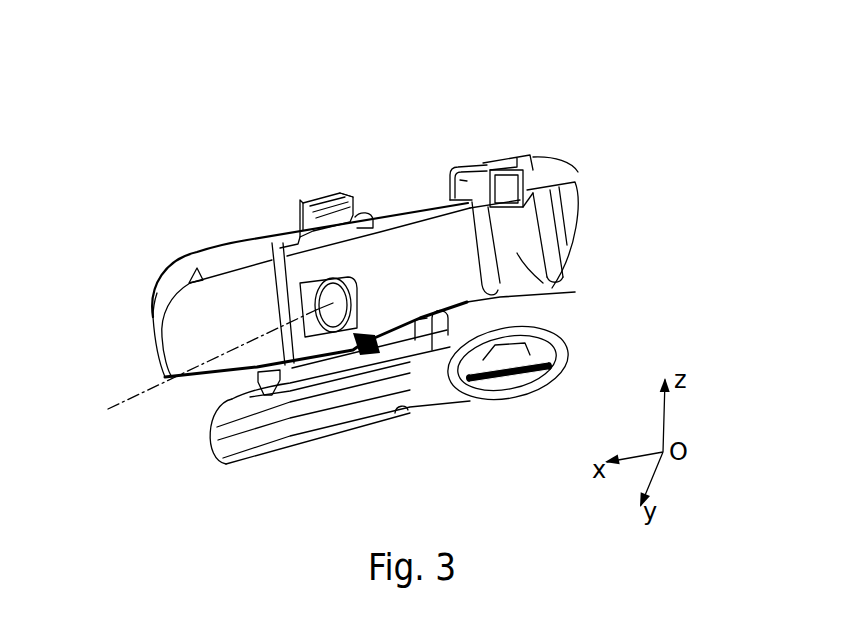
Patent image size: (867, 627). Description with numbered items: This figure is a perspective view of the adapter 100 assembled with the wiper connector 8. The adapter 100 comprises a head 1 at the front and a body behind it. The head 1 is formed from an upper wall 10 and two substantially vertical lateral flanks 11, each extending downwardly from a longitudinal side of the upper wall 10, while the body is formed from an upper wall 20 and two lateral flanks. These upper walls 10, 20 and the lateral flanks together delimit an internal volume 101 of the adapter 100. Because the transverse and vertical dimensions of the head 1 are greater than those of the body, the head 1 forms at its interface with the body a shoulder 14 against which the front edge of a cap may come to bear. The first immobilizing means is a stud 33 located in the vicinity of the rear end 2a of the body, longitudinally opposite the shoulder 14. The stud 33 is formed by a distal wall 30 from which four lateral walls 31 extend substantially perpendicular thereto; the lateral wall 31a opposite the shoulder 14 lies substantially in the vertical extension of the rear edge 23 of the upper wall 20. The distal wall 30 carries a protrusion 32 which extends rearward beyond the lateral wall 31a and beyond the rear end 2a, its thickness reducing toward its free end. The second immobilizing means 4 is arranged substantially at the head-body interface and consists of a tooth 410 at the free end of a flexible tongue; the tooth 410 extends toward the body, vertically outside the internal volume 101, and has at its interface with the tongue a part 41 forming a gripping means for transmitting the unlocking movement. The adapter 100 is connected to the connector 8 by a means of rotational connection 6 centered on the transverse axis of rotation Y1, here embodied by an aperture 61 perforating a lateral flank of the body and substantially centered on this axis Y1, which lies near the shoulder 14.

The head 1 is at (165, 272).
The upper wall 10 is at (237, 238).
The lateral flanks 11 is at (197, 332).
The shoulder 14 is at (263, 232).
The upper wall 20 is at (397, 217).
The rear edge 23 is at (533, 188).
The rear end 2a is at (579, 241).
The distal wall 30 is at (500, 152).
The lateral walls 31 is at (453, 170).
The lateral wall 31a is at (523, 173).
The protrusion 32 is at (517, 160).
The stud 33 is at (507, 157).
The second immobilizing means 4 is at (320, 180).
The part forming a gripping means 41 is at (302, 203).
The tooth 410 is at (357, 193).
The adapter 100 is at (388, 148).
The internal volume 101 is at (553, 296).
The means of rotational connection 6 is at (372, 352).
The aperture 61 is at (268, 368).
The connector 8 is at (317, 413).
The transverse axis of rotation Y1 is at (197, 367).